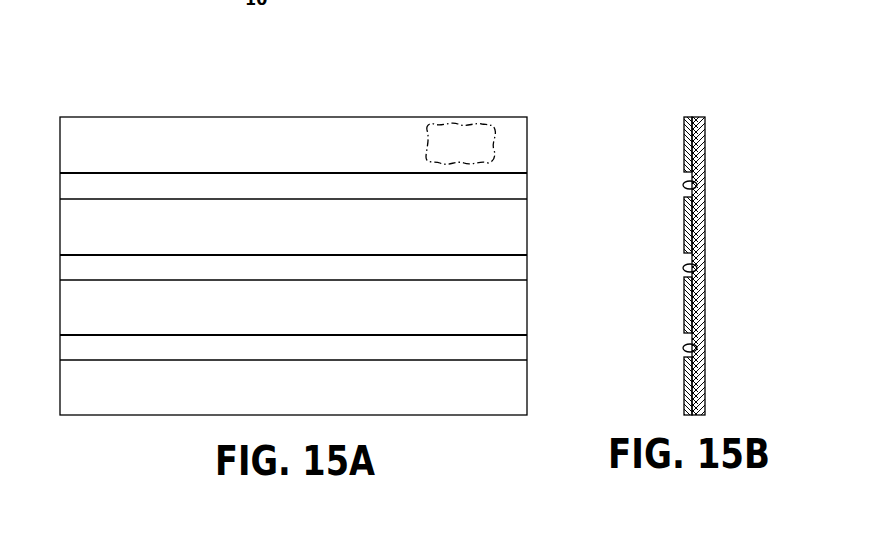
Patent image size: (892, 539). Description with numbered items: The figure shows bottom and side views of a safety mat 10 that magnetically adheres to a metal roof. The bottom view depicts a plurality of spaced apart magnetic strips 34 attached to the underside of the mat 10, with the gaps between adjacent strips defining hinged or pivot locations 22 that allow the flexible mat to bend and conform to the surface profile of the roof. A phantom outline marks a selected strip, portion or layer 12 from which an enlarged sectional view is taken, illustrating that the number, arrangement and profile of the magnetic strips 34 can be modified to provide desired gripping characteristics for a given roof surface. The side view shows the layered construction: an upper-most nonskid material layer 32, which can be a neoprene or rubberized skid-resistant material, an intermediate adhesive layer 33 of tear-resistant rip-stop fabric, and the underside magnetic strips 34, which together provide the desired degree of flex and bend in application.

In FIG. 15A, the mat 10 is at (73, 97).
In FIG. 15B, the mat 10 is at (655, 176).
In FIG. 15A, the sectional view 12 is at (419, 148).
In FIG. 15A, the hinged or pivot locations 22 is at (75, 183).
In FIG. 15B, the hinged or pivot locations 22 is at (697, 187).
In FIG. 15B, the nonskid material layer 32 is at (705, 145).
In FIG. 15B, the intermediate adhesive layer 33 is at (689, 116).
In FIG. 15A, the magnetic strips 34 is at (286, 135).
In FIG. 15B, the magnetic strips 34 is at (684, 220).